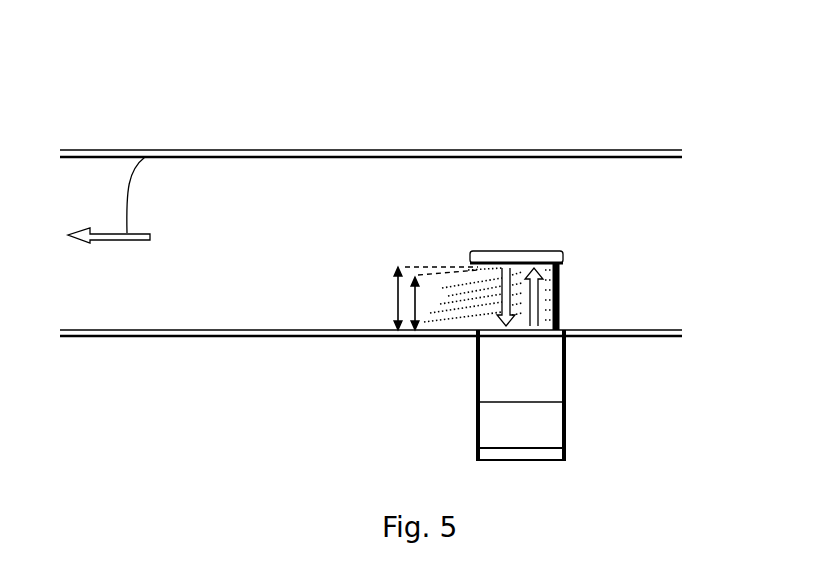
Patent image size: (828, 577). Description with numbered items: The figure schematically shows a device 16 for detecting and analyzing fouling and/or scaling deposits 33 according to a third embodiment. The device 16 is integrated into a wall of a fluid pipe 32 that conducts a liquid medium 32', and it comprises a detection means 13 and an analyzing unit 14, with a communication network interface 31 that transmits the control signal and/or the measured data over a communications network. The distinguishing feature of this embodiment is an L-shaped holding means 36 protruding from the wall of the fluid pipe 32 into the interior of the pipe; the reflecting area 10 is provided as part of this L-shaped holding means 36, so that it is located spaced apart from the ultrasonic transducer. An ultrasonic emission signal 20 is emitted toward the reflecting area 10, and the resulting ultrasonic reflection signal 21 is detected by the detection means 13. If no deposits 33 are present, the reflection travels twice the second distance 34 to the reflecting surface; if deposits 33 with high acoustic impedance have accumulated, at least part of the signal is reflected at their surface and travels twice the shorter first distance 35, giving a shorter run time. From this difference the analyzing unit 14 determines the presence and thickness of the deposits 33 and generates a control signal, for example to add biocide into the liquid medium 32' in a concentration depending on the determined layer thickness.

The reflecting area 10 is at (567, 279).
The detection means 13 is at (543, 357).
The analyzing unit 14 is at (543, 413).
The device 16 is at (427, 372).
The ultrasonic emission signal 20 is at (560, 296).
The ultrasonic reflection signal 21 is at (555, 304).
The communication network interface 31 is at (490, 455).
The fluid pipe 32 is at (371, 115).
The liquid medium 32' is at (175, 158).
The fouling and/or scaling deposits 33 is at (470, 262).
The second distance 34 is at (396, 297).
The first distance 35 is at (440, 300).
The L-shaped holding means 36 is at (565, 257).